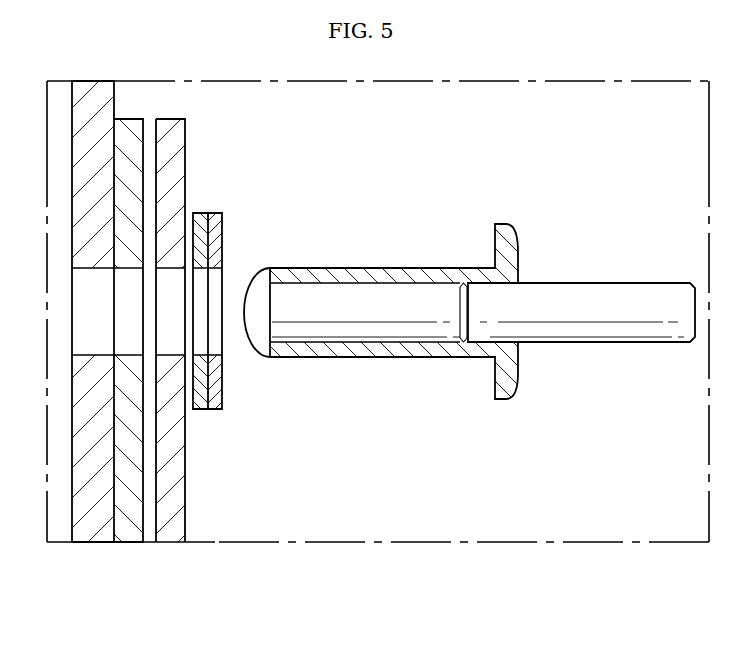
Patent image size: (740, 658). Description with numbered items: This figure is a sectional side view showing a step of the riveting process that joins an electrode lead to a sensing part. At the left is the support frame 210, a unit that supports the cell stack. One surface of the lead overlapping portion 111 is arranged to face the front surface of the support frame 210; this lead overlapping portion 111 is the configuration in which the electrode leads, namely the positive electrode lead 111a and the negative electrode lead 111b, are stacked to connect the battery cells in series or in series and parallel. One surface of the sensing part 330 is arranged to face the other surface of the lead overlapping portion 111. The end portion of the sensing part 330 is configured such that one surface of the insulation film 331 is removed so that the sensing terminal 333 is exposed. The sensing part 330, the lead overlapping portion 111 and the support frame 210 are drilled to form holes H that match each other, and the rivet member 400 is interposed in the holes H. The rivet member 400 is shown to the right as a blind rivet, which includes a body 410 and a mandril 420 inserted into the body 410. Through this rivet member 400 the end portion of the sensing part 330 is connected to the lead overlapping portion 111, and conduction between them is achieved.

The support frame 210 is at (95, 533).
The lead overlapping portion 111 is at (149, 379).
The positive electrode lead 111a is at (179, 355).
The negative electrode lead 111b is at (130, 533).
The hole H is at (128, 322).
The sensing part 330 is at (246, 360).
The insulation film 331 is at (197, 461).
The sensing terminal 333 is at (200, 410).
The rivet member 400 is at (469, 273).
The body 410 is at (507, 225).
The mandril 420 is at (507, 192).